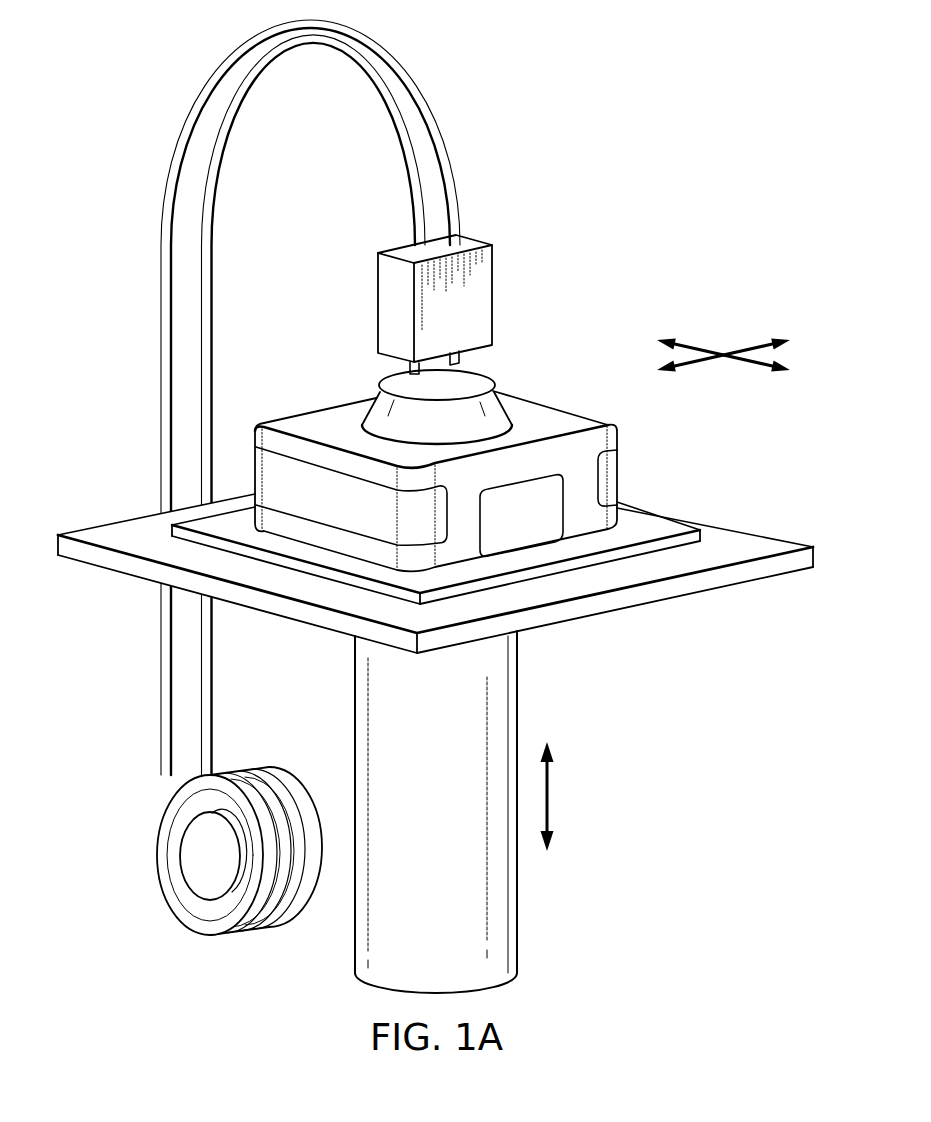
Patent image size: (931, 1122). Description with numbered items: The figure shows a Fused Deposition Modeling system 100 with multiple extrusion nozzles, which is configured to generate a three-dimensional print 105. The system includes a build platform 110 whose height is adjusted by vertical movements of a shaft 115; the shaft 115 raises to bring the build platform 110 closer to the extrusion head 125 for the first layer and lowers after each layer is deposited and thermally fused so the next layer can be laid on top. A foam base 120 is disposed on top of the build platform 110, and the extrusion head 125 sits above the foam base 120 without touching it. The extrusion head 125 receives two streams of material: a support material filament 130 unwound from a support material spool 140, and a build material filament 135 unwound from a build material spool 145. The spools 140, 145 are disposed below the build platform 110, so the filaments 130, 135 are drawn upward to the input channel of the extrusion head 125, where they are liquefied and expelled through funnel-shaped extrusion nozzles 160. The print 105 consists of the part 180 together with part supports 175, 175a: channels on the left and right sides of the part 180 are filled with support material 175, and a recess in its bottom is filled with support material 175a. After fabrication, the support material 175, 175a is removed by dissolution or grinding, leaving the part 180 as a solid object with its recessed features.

The FDM system 100 is at (435, 506).
The 3D print 105 is at (342, 384).
The build platform 110 is at (118, 537).
The shaft 115 is at (517, 904).
The foam base 120 is at (660, 532).
The extrusion head 125 is at (378, 303).
The support material filament 130 is at (225, 331).
The build material filament 135 is at (147, 346).
The support material spool 140 is at (205, 824).
The build material spool 145 is at (157, 855).
The extrusion nozzle 160 is at (462, 358).
The part support 175 is at (283, 472).
The support material 175a is at (527, 537).
The part 180 is at (573, 418).